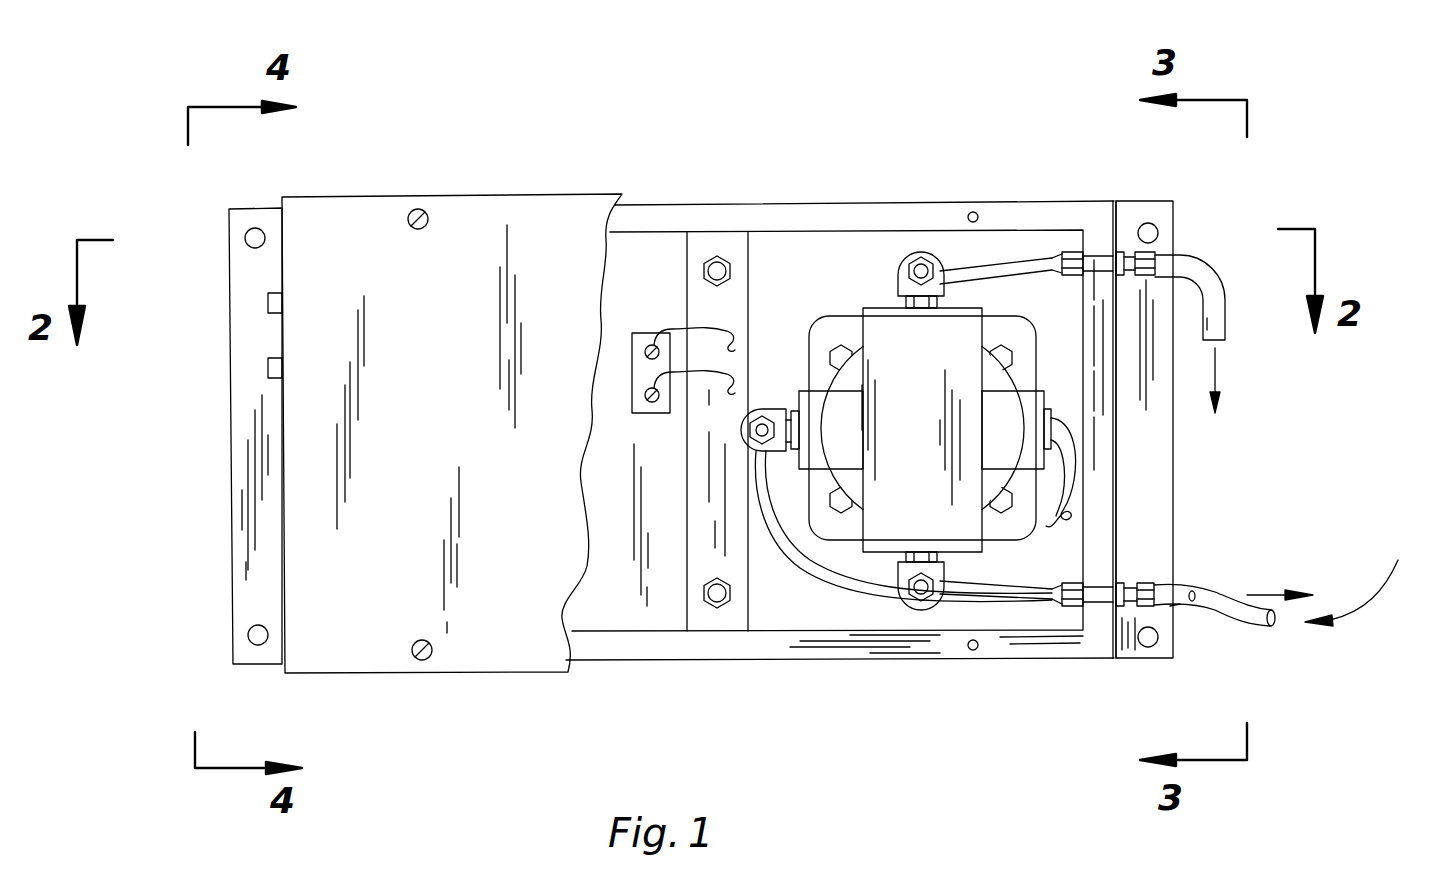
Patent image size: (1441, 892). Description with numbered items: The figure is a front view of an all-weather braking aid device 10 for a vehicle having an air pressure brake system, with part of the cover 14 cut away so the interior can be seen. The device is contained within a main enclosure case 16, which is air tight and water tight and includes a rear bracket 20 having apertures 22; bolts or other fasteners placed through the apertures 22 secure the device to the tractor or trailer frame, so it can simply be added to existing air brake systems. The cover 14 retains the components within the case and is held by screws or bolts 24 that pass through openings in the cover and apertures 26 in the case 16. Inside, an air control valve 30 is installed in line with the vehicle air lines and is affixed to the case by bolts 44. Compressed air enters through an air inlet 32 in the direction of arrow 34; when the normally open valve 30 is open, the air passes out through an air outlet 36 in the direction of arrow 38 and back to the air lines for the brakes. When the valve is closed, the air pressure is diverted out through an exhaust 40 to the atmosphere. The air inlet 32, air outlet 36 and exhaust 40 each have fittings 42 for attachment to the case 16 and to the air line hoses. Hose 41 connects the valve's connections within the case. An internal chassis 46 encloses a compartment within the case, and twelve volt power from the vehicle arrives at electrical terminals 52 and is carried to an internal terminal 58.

The all-weather braking aid device 10 is at (1335, 90).
The cover 14 is at (313, 470).
The main enclosure case 16 is at (1033, 205).
The rear bracket 20 is at (1160, 201).
The apertures 22 is at (247, 247).
The screws or bolts 24 is at (420, 209).
The apertures 26 is at (973, 212).
The air control valve 30 is at (1003, 428).
The air inlet 32 is at (1212, 583).
The arrow 34 is at (1370, 583).
The air outlet 36 is at (1170, 605).
The arrow 38 is at (1267, 585).
The exhaust 40 is at (1222, 296).
The connecting hose 41 is at (838, 512).
The fittings 42 is at (1120, 253).
The bolts 44 is at (838, 347).
The internal chassis 46 is at (643, 222).
The electrical terminals 52 is at (268, 305).
The internal terminal 58 is at (655, 333).